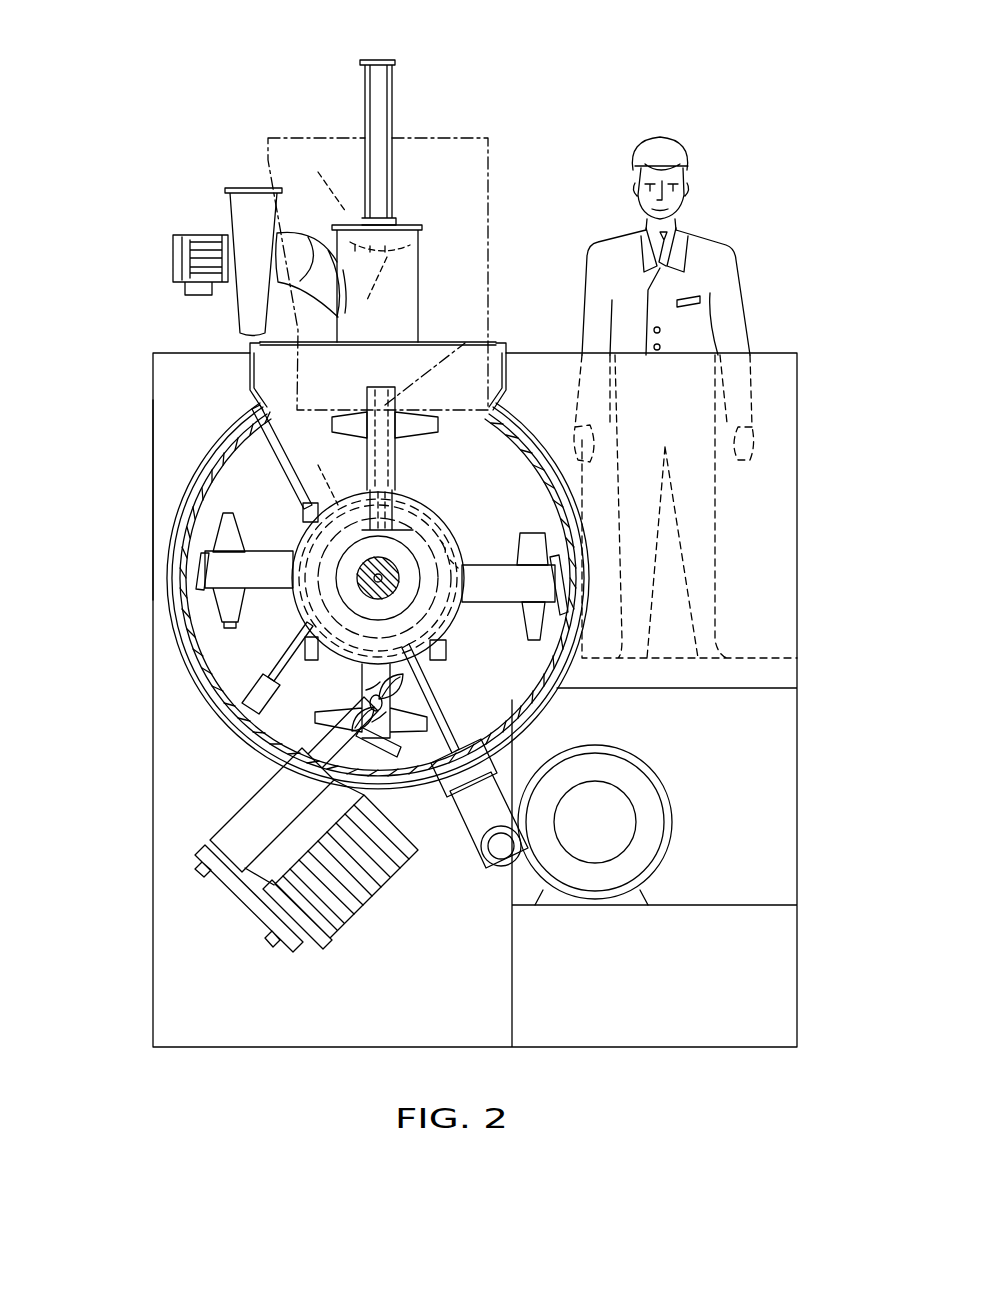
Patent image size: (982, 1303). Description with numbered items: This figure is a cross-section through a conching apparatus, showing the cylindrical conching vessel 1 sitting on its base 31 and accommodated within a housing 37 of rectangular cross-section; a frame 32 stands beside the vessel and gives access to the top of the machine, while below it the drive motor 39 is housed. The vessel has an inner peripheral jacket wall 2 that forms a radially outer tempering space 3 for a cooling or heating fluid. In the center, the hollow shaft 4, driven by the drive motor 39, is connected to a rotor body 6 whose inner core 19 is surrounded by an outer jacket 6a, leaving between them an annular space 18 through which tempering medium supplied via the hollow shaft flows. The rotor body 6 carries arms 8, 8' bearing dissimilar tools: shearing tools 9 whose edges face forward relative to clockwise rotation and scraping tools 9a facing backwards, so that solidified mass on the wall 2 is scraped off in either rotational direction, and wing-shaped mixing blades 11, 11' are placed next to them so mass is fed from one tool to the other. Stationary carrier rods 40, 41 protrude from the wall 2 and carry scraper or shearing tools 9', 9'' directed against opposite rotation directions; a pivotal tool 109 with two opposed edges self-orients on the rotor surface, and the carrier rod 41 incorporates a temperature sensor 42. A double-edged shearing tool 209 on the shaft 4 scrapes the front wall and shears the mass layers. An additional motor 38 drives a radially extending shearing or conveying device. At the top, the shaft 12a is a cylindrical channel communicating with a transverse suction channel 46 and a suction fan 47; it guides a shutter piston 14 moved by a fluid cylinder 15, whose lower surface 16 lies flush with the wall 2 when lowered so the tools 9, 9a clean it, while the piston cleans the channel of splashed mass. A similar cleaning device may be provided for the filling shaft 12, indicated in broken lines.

The conching vessel 1 is at (210, 445).
The inner peripheral jacket wall 2 is at (210, 520).
The tempering space 3 is at (208, 680).
The hollow shaft 4 is at (372, 581).
The rotor body 6 is at (447, 512).
The outer jacket 6a is at (445, 650).
The arm 8 is at (326, 562).
The carrier rod 8' is at (508, 606).
The shearing tool 9 is at (467, 593).
The scraper or shearing tool 9' is at (355, 691).
The scraper or shearing tool 9'' is at (418, 698).
The scraping tool 9a is at (203, 560).
The mixing blade 11 is at (357, 561).
The mixing blade 11' is at (568, 627).
The shaft 12 is at (490, 195).
The shaft 12a is at (420, 262).
The shutter piston 14 is at (329, 181).
The fluid cylinder 15 is at (378, 93).
The lower surface 16 is at (380, 285).
The annular space 18 is at (340, 509).
The inner core 19 is at (455, 535).
The base 31 is at (153, 960).
The frame 32 is at (808, 577).
The housing 37 is at (153, 447).
The additional motor 38 is at (355, 925).
The drive motor 39 is at (650, 757).
The carrier rod 40 is at (272, 418).
The carrier rod 41 is at (290, 652).
The temperature sensor 42 is at (262, 722).
The transverse suction channel 46 is at (297, 248).
The suction fan 47 is at (243, 220).
The pivotal tool 109 is at (305, 512).
The double-edged shearing tool 209 is at (465, 343).